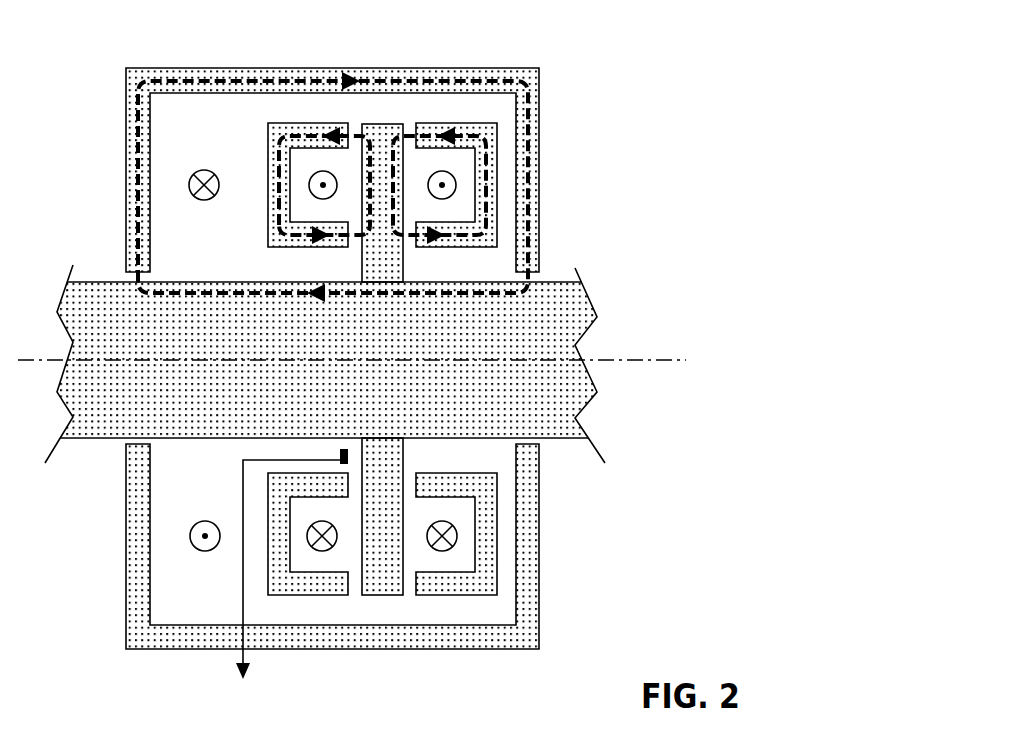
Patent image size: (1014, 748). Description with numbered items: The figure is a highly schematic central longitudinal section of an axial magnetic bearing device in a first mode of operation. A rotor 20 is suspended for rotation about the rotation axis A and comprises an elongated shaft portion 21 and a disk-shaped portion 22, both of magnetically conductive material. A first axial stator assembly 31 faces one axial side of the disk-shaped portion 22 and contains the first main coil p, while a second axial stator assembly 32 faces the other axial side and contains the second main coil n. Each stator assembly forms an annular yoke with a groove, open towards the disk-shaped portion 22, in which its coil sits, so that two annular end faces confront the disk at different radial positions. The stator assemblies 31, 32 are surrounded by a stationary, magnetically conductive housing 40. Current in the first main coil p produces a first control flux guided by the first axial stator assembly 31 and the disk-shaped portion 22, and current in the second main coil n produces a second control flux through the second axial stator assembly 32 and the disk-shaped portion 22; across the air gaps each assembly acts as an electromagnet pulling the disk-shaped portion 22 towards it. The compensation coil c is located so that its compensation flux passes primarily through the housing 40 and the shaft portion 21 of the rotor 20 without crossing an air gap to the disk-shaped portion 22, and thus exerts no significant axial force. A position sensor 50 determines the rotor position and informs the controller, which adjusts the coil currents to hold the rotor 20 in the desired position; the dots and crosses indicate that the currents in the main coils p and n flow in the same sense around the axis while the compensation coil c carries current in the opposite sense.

The rotor 20 is at (575, 243).
The shaft portion 21 is at (92, 300).
The disk-shaped portion 22 is at (380, 135).
The first axial stator assembly 31 is at (478, 131).
The second axial stator assembly 32 is at (280, 140).
The housing 40 is at (532, 97).
The position sensor 50 is at (348, 462).
The compensation coil c is at (204, 170).
The second main coil n is at (323, 171).
The first main coil p is at (440, 171).
The rotation axis A is at (622, 360).